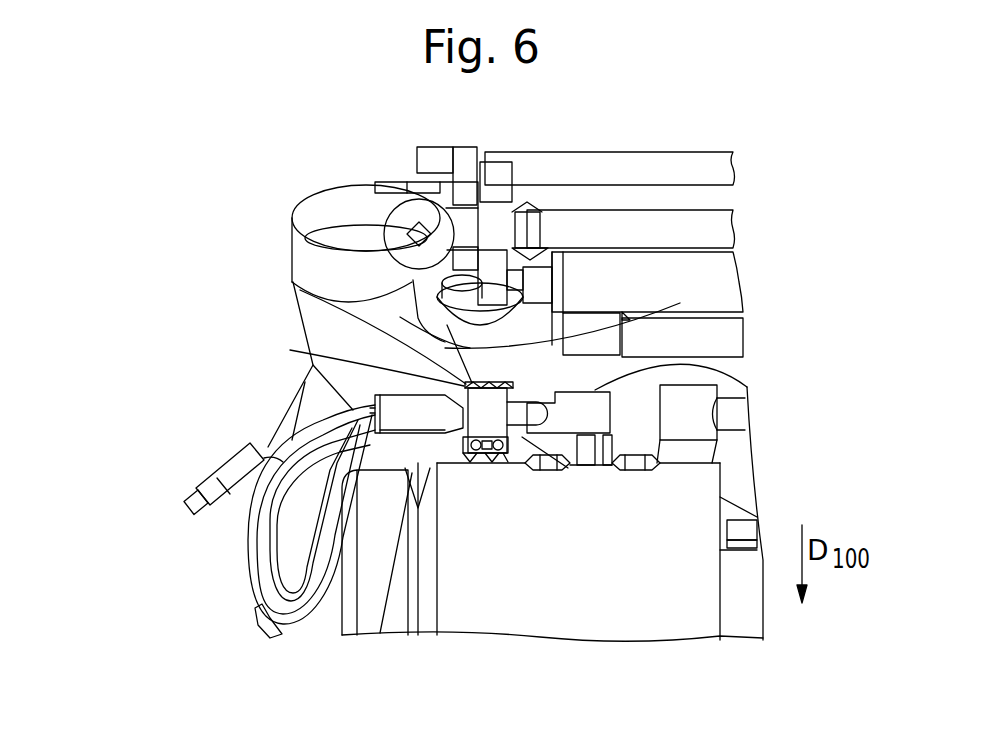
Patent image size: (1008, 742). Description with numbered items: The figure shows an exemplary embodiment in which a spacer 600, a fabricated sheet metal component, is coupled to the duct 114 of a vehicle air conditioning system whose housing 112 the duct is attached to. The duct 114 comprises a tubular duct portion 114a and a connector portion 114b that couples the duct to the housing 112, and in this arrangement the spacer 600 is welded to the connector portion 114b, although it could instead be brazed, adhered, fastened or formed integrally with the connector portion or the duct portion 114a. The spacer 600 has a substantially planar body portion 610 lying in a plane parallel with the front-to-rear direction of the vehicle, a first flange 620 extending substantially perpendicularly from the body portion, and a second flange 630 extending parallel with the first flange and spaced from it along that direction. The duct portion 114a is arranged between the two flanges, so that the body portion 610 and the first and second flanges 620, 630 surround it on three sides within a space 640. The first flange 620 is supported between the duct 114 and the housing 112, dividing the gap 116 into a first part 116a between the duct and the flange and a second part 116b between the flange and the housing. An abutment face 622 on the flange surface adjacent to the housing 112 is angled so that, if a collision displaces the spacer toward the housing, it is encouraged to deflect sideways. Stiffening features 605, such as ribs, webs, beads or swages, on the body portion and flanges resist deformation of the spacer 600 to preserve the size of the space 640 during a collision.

The spacer 600 is at (540, 387).
The stiffening features 605 is at (495, 383).
The body portion 610 is at (472, 384).
The first flange 620 is at (480, 456).
The abutment face 622 is at (497, 456).
The second flange 630 is at (490, 383).
The space 640 is at (542, 455).
The housing 112 is at (657, 498).
The duct 114 is at (372, 411).
The duct portion 114a is at (466, 386).
The connector portion 114b is at (587, 412).
The gap 116 is at (112, 534).
The first part of the gap 116a is at (462, 440).
The second part of the gap 116b is at (467, 440).